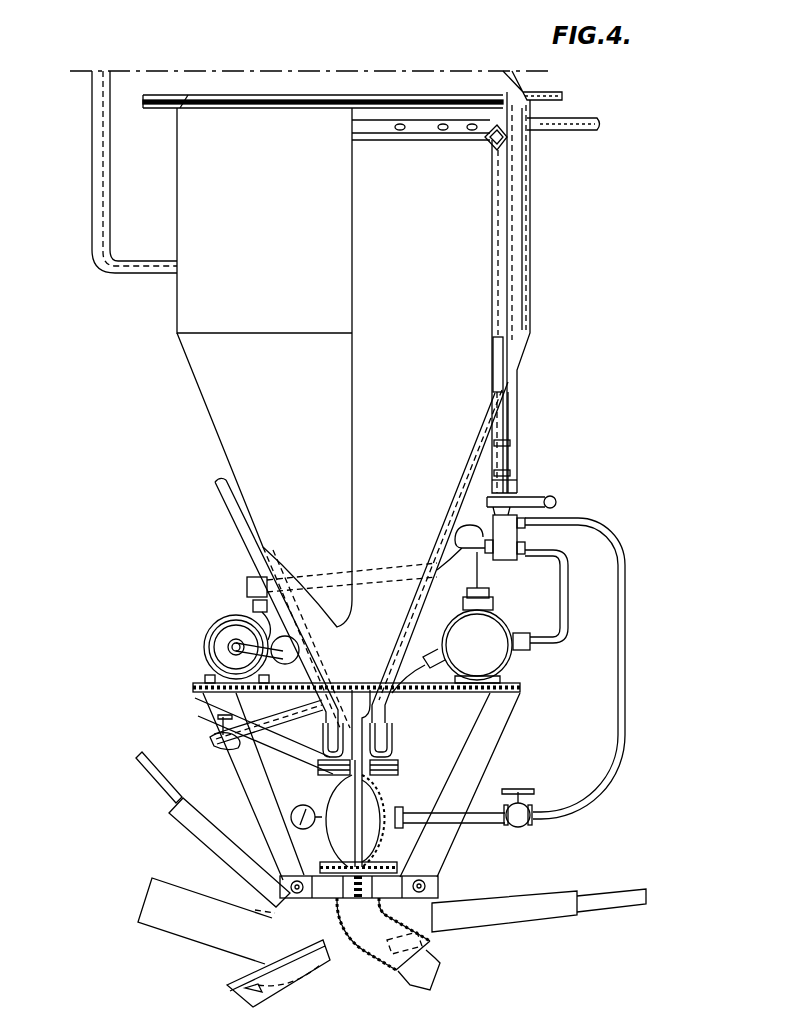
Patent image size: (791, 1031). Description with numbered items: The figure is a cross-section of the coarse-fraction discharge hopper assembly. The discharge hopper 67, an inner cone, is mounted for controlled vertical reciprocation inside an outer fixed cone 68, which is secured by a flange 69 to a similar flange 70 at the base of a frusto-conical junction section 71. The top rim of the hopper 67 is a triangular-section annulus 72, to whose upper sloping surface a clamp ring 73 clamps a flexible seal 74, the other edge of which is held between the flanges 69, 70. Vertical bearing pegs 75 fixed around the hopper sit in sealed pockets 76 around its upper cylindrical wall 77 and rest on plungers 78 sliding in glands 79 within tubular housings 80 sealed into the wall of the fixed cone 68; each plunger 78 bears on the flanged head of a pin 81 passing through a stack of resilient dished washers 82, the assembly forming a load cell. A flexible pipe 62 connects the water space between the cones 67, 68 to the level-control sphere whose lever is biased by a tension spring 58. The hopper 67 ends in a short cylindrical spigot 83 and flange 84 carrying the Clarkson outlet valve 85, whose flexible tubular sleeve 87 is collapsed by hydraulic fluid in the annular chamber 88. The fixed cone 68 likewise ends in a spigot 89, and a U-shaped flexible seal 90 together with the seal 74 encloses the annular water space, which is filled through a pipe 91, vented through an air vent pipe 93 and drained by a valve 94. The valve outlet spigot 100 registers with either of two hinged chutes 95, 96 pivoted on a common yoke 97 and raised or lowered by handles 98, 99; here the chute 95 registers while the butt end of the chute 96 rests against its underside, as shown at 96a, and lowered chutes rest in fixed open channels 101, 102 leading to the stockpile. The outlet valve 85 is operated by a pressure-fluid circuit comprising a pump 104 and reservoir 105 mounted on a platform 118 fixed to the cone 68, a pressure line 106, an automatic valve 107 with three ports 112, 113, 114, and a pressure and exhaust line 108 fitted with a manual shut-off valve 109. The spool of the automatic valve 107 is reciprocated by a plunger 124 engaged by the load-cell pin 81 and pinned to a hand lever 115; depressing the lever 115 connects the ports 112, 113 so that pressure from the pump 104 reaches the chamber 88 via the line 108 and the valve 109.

The tension spring 58 is at (264, 736).
The flexible pipe 62 is at (213, 507).
The discharge hopper 67 is at (422, 289).
The outer fixed cone 68 is at (531, 186).
The flange 69 is at (162, 108).
The flange 70 is at (167, 95).
The frusto-conical junction section 71 is at (187, 95).
The triangular-section annulus 72 is at (490, 148).
The clamp ring 73 is at (420, 120).
The flexible seal 74 is at (492, 92).
The vertical bearing pegs 75 is at (505, 345).
The sealed pockets 76 is at (498, 255).
The upper cylindrical wall 77 is at (512, 222).
The plungers 78 is at (505, 392).
The glands 79 is at (492, 400).
The tubular housings 80 is at (512, 420).
The pin 81 is at (512, 448).
The resilient dished washers 82 is at (518, 470).
The short cylindrical spigot 83 is at (372, 700).
The flange 84 is at (398, 762).
The hopper outlet valve 85 is at (319, 790).
The flexible tubular sleeve 87 is at (385, 832).
The annular chamber 88 is at (390, 800).
The short cylindrical spigot 89 is at (393, 712).
The U-shaped flexible seal 90 is at (243, 745).
The pipe 91 is at (160, 274).
The air vent pipe 93 is at (582, 130).
The valve 94 is at (212, 728).
The hinged chute 95 is at (386, 962).
The hinged chute 96 is at (183, 920).
The butt end of chute 96a is at (328, 965).
The common yoke 97 is at (438, 884).
The handle 98 is at (616, 889).
The handle 99 is at (152, 778).
The short spigot 100 is at (335, 905).
The fixed open channel 101 is at (420, 985).
The fixed open channel 102 is at (250, 988).
The pump 104 is at (222, 620).
The reservoir 105 is at (497, 658).
The pressure line 106 is at (382, 565).
The automatic valve 107 is at (500, 560).
The pressure and exhaust line 108 is at (617, 662).
The manual shut-off valve 109 is at (525, 825).
The port 112 is at (465, 528).
The port 113 is at (556, 530).
The port 114 is at (500, 562).
The hand lever 115 is at (545, 498).
The platform 118 is at (490, 705).
The plunger 124 is at (530, 512).